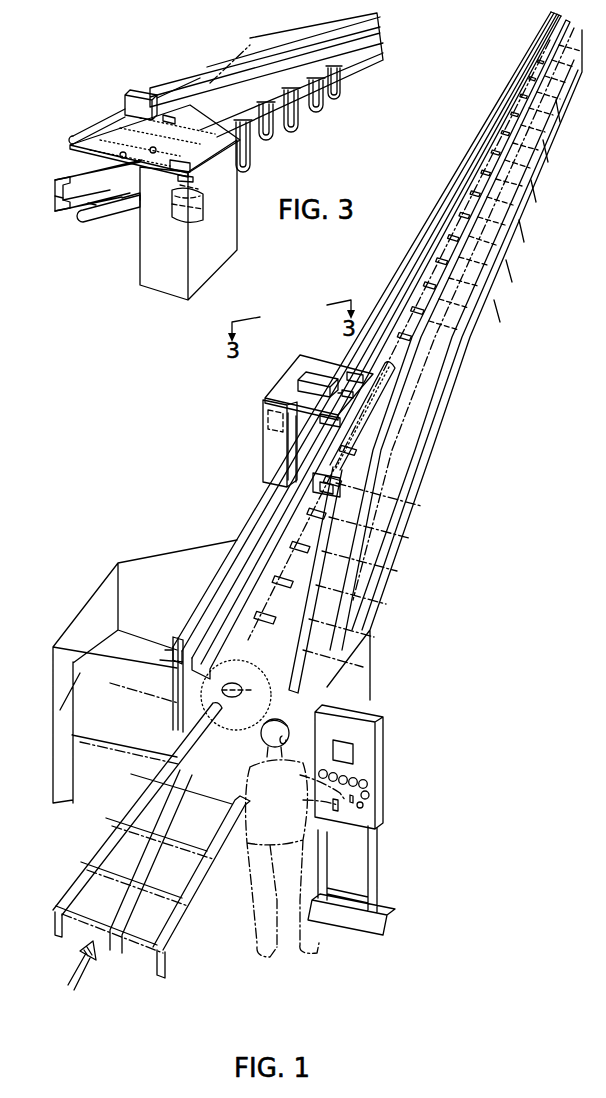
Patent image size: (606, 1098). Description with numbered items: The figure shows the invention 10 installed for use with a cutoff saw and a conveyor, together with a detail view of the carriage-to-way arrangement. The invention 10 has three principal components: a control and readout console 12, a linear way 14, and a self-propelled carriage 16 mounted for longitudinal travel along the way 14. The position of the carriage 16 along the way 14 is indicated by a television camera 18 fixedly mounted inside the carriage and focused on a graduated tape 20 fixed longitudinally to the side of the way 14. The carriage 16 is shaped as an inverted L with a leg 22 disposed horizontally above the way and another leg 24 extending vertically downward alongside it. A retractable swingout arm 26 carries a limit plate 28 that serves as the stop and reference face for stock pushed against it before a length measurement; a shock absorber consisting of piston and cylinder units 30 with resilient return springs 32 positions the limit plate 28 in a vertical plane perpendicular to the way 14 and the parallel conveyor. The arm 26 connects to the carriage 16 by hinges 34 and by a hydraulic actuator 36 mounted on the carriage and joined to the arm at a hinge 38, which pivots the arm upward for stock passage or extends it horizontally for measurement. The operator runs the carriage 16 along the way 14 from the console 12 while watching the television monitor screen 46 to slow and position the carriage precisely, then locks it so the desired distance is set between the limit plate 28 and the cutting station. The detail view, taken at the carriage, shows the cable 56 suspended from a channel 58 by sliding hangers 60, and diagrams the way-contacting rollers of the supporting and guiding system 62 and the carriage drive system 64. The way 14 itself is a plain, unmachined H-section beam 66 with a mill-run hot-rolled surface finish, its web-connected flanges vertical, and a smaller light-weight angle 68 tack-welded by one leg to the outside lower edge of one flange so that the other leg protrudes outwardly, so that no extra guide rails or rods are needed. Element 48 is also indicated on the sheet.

In FIG. 1, the invention 10 is at (134, 436).
In FIG. 1, the control and readout console 12 is at (389, 790).
In FIG. 3, the linear way 14 is at (64, 167).
In FIG. 1, the linear way 14 is at (222, 552).
In FIG. 3, the self-propelled carriage 16 is at (136, 271).
In FIG. 1, the self-propelled carriage 16 is at (256, 438).
In FIG. 3, the television camera 18 is at (198, 174).
In FIG. 1, the television camera 18 is at (267, 411).
In FIG. 3, the graduated tape 20 is at (117, 212).
In FIG. 1, the graduated tape 20 is at (262, 520).
In FIG. 3, the leg 22 is at (113, 150).
In FIG. 1, the leg 22 is at (318, 367).
In FIG. 3, the leg 24 is at (138, 197).
In FIG. 1, the leg 24 is at (288, 442).
In FIG. 3, the swingout arm 26 is at (118, 110).
In FIG. 1, the swingout arm 26 is at (372, 441).
In FIG. 3, the limit plate 28 is at (132, 92).
In FIG. 1, the limit plate 28 is at (340, 490).
In FIG. 3, the piston and cylinder units 30 is at (70, 143).
In FIG. 1, the piston and cylinder units 30 is at (342, 426).
In FIG. 1, the springs 32 is at (380, 413).
In FIG. 1, the hinges 34 is at (365, 375).
In FIG. 1, the hydraulic actuator 36 is at (296, 382).
In FIG. 1, the hinge 38 is at (355, 393).
In FIG. 1, the television monitor screen 46 is at (354, 758).
In FIG. 1, the stop 48 is at (605, 1053).
In FIG. 3, the cable 56 is at (323, 100).
In FIG. 3, the channel 58 is at (336, 48).
In FIG. 3, the sliding hangers 60 is at (334, 61).
In FIG. 3, the supporting and guiding system 62 is at (181, 130).
In FIG. 3, the carriage drive system 64 is at (167, 180).
In FIG. 3, the H-section beam 66 is at (57, 201).
In FIG. 3, the angle 68 is at (100, 208).